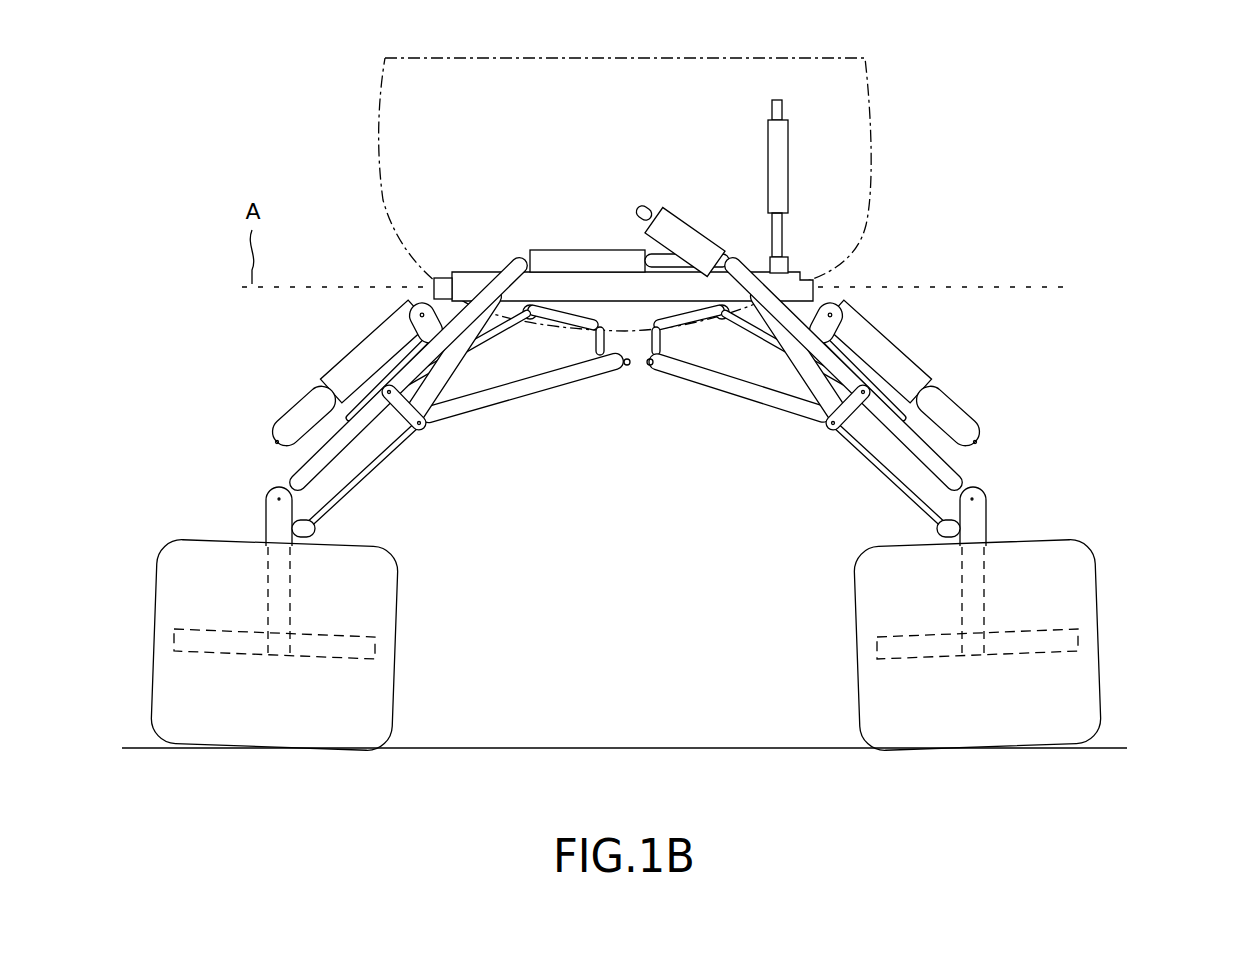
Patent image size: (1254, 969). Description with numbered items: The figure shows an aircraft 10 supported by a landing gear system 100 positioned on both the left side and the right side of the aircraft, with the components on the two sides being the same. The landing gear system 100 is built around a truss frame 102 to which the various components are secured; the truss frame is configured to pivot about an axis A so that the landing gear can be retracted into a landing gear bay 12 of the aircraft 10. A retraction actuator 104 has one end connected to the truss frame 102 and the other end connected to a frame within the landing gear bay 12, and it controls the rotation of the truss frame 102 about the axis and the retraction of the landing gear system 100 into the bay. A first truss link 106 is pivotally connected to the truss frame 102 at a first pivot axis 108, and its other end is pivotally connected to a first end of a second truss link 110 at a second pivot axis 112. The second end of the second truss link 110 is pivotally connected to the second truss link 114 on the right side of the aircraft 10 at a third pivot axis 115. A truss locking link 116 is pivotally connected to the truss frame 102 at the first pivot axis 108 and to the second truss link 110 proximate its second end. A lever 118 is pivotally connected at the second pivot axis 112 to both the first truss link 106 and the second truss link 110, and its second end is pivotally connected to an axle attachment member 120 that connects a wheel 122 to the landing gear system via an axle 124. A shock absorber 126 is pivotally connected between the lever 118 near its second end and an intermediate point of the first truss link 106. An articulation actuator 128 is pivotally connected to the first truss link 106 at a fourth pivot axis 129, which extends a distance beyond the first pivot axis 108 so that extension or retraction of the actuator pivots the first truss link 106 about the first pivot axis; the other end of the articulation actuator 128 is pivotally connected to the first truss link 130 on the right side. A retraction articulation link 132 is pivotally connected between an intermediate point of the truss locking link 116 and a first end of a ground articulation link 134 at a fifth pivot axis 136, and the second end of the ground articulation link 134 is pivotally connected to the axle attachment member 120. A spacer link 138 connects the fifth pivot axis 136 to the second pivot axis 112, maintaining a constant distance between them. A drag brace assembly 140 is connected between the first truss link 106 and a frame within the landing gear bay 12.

The aircraft 10 is at (357, 92).
The landing gear bay 12 is at (862, 78).
The landing gear system 100 is at (1120, 355).
The truss frame 102 is at (447, 280).
The retraction actuator 104 is at (772, 140).
The first truss link 106 is at (843, 350).
The first pivot axis 108 is at (812, 291).
The second truss link 110 is at (677, 374).
The second pivot axis 112 is at (864, 420).
The second truss link 114 is at (502, 384).
The third pivot axis 115 is at (622, 366).
The truss locking link 116 is at (651, 366).
The lever 118 is at (919, 440).
The axle attachment member 120 is at (988, 516).
The wheel 122 is at (1100, 577).
The axle 124 is at (1068, 633).
The shock absorber 126 is at (920, 385).
The articulation actuator 128 is at (576, 256).
The fourth pivot axis 129 is at (729, 254).
The first truss link 130 is at (494, 282).
The retraction articulation link 132 is at (752, 358).
The ground articulation link 134 is at (901, 500).
The fifth pivot axis 136 is at (856, 420).
The spacer link 138 is at (846, 406).
The drag brace assembly 140 is at (668, 226).